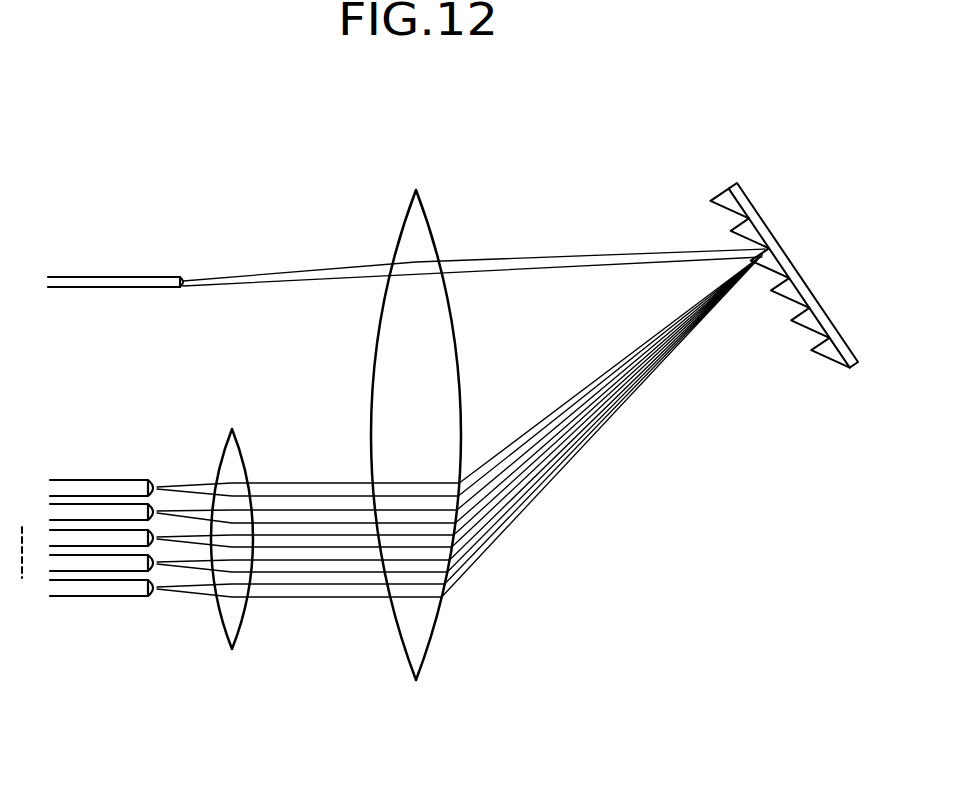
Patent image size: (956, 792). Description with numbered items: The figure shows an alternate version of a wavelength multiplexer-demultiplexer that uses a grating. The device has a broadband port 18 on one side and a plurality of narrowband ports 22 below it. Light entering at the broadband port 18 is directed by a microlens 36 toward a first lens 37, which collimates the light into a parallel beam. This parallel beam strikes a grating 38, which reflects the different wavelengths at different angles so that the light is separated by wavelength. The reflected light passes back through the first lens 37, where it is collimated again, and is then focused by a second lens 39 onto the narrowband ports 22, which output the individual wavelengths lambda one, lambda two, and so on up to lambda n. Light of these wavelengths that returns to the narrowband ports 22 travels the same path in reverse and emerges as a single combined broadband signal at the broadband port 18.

The broadband port 18 is at (63, 290).
The microlens 36 is at (183, 278).
The first lens 37 is at (405, 222).
The grating 38 is at (773, 248).
The second lens 39 is at (228, 458).
The narrowband ports 22 is at (88, 490).